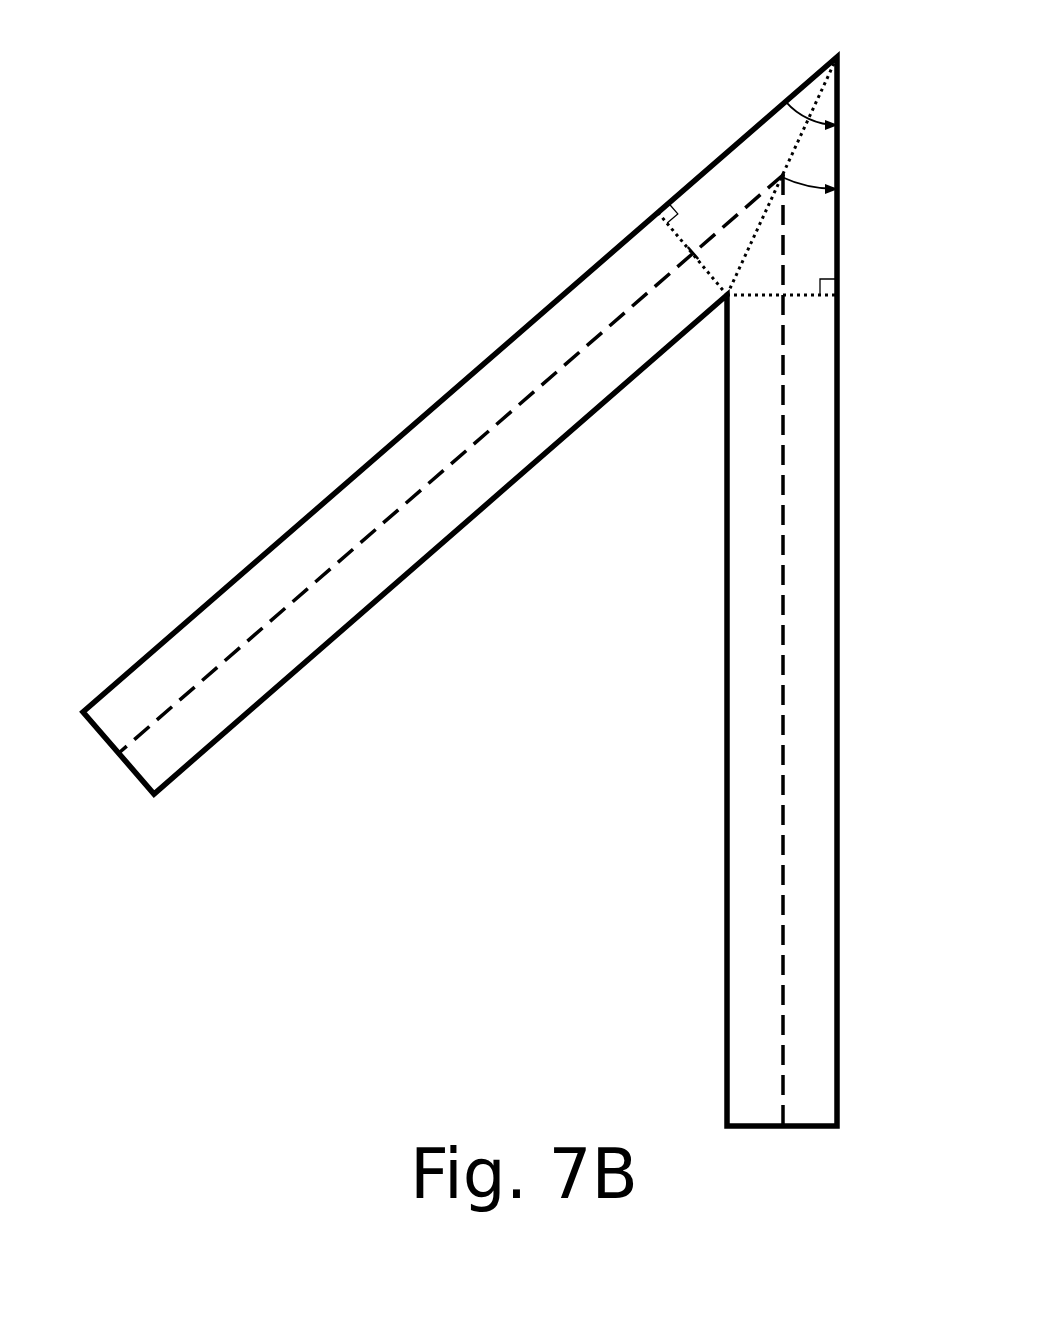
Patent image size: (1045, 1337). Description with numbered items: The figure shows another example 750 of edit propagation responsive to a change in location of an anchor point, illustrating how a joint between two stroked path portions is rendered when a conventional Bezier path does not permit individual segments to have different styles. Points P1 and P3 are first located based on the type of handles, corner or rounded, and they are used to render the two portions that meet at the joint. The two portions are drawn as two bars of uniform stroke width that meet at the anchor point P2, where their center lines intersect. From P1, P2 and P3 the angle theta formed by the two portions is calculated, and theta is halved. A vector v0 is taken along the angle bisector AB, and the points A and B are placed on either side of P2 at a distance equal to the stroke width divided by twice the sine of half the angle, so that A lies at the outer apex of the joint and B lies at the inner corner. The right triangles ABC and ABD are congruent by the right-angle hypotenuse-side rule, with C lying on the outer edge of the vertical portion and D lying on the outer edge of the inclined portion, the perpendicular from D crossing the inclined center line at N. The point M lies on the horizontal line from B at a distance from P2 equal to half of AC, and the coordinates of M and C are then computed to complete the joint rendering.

The example of edit propagation 750 is at (318, 140).
The point A is at (840, 52).
The point B is at (729, 297).
The point C is at (839, 294).
The point D is at (658, 212).
The point M is at (784, 298).
The point N is at (691, 253).
The point P1 is at (132, 748).
The point P2 is at (783, 173).
The point P3 is at (783, 1128).